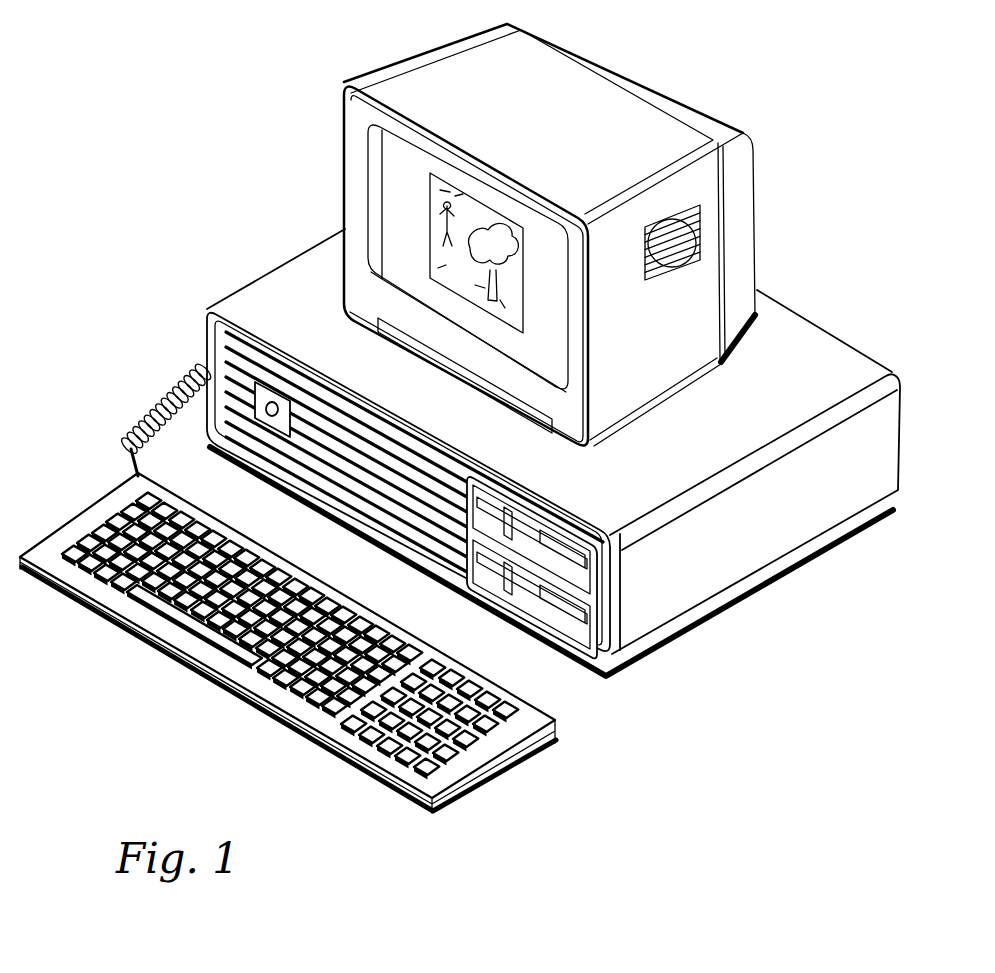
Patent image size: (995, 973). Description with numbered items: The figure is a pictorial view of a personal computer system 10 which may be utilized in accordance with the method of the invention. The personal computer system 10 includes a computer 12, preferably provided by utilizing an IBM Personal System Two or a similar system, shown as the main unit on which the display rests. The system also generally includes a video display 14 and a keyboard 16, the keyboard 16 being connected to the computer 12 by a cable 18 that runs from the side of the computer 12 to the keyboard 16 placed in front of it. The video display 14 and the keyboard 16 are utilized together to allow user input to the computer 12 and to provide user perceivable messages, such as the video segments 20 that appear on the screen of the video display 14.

The personal computer system 10 is at (206, 103).
The computer 12 is at (757, 588).
The video display 14 is at (604, 235).
The keyboard 16 is at (345, 755).
The cable 18 is at (130, 419).
The video segments 20 is at (523, 303).